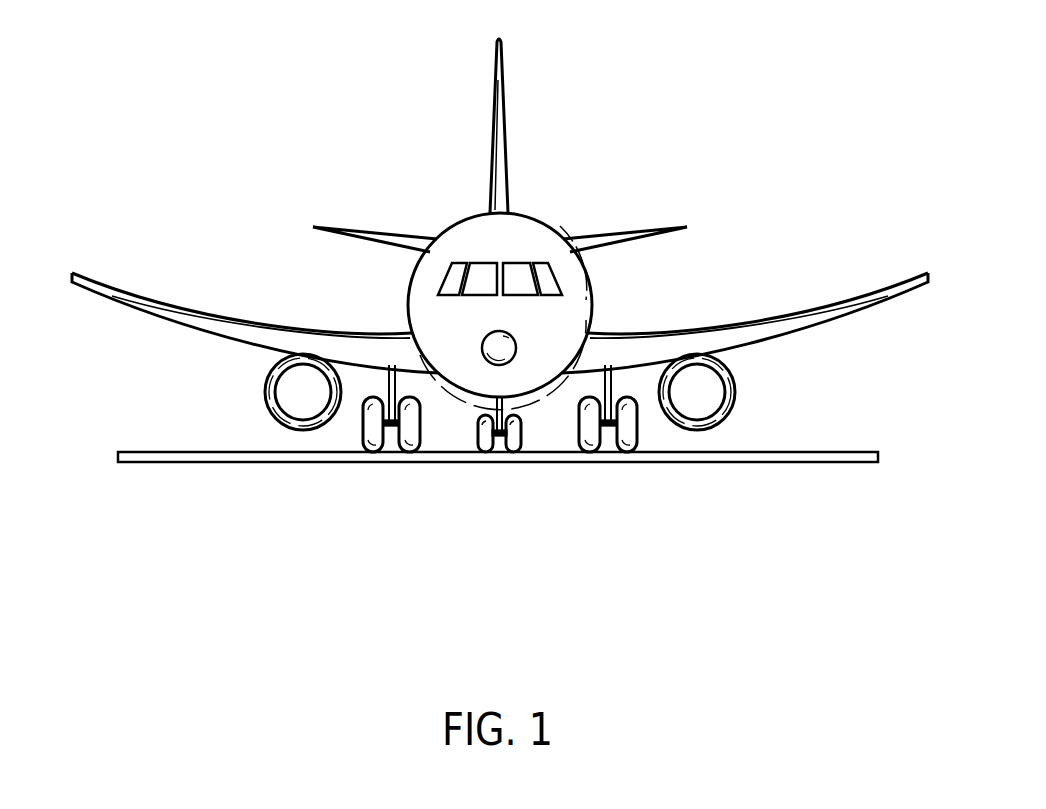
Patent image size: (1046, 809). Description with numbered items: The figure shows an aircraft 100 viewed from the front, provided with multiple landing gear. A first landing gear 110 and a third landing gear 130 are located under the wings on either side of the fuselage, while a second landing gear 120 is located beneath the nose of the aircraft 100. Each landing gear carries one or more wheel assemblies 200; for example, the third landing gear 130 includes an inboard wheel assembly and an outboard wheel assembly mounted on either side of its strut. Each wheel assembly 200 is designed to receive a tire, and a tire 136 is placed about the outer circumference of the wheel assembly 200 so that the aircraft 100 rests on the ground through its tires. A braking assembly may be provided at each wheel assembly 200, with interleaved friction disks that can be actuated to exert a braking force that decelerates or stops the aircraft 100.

The aircraft 100 is at (343, 127).
The first landing gear 110 is at (635, 435).
The second landing gear 120 is at (518, 437).
The third landing gear 130 is at (393, 460).
The tire 136 is at (397, 452).
The wheel assembly 200 is at (408, 452).